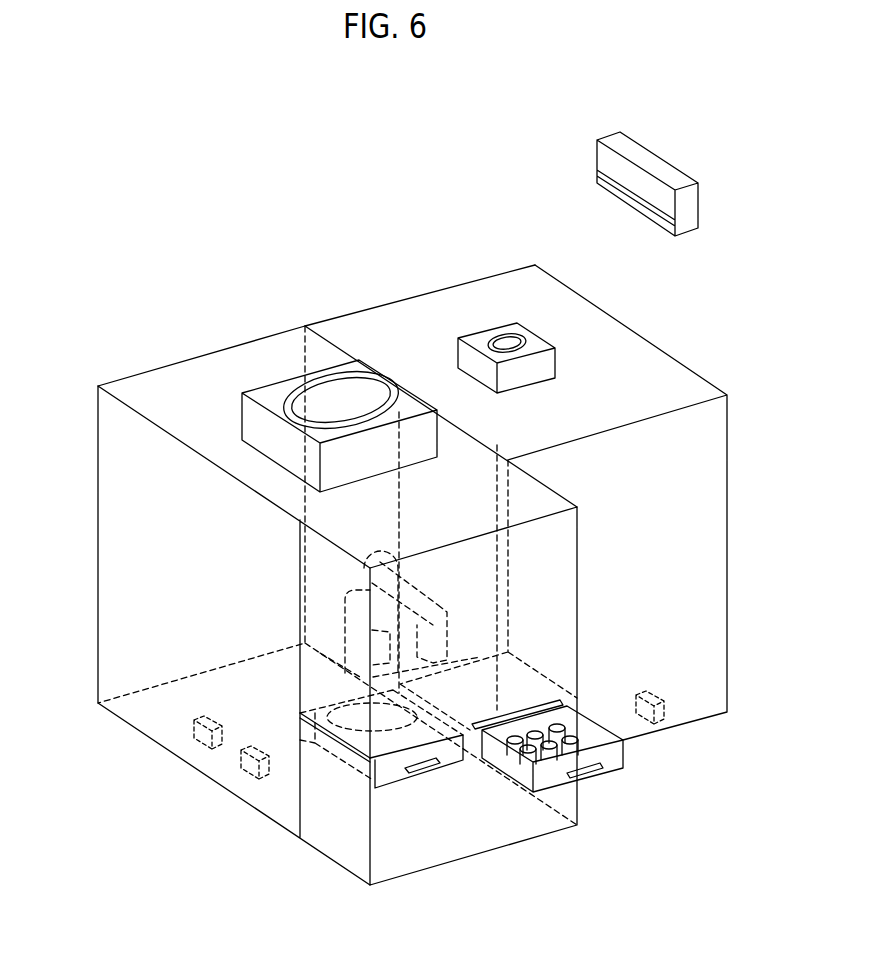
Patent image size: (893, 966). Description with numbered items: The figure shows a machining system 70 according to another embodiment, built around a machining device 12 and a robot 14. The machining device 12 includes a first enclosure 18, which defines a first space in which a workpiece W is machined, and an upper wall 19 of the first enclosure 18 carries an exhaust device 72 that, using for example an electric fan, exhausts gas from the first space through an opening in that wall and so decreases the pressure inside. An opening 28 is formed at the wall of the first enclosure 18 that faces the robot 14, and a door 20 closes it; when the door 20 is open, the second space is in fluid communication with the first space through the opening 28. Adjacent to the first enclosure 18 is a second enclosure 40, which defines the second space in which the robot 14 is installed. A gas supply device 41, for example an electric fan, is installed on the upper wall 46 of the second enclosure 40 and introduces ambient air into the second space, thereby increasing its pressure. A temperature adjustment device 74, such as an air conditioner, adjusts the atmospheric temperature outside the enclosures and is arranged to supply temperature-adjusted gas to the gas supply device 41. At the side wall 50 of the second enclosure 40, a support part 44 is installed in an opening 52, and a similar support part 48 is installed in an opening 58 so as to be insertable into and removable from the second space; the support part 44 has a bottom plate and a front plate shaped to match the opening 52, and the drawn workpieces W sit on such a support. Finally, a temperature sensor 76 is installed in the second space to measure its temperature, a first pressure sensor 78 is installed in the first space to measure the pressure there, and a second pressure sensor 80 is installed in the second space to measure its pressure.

The machining system 70 is at (112, 142).
The temperature adjustment device 74 is at (660, 170).
The machining device 12 is at (456, 252).
The first enclosure 18 is at (655, 343).
The upper wall 19 is at (410, 318).
The second enclosure 40 is at (95, 440).
The upper wall 46 is at (182, 392).
The side wall 50 is at (552, 586).
The gas supply device 41 is at (268, 392).
The exhaust device 72 is at (516, 322).
The door 20 is at (437, 490).
The opening 28 is at (520, 456).
The robot 14 is at (330, 607).
The opening 52 is at (537, 720).
The opening 58 is at (393, 775).
The support part 48 is at (435, 786).
The support part 44 is at (608, 790).
The workpiece W is at (540, 765).
The temperature sensor 76 is at (197, 742).
The second pressure sensor 80 is at (243, 770).
The first pressure sensor 78 is at (658, 734).